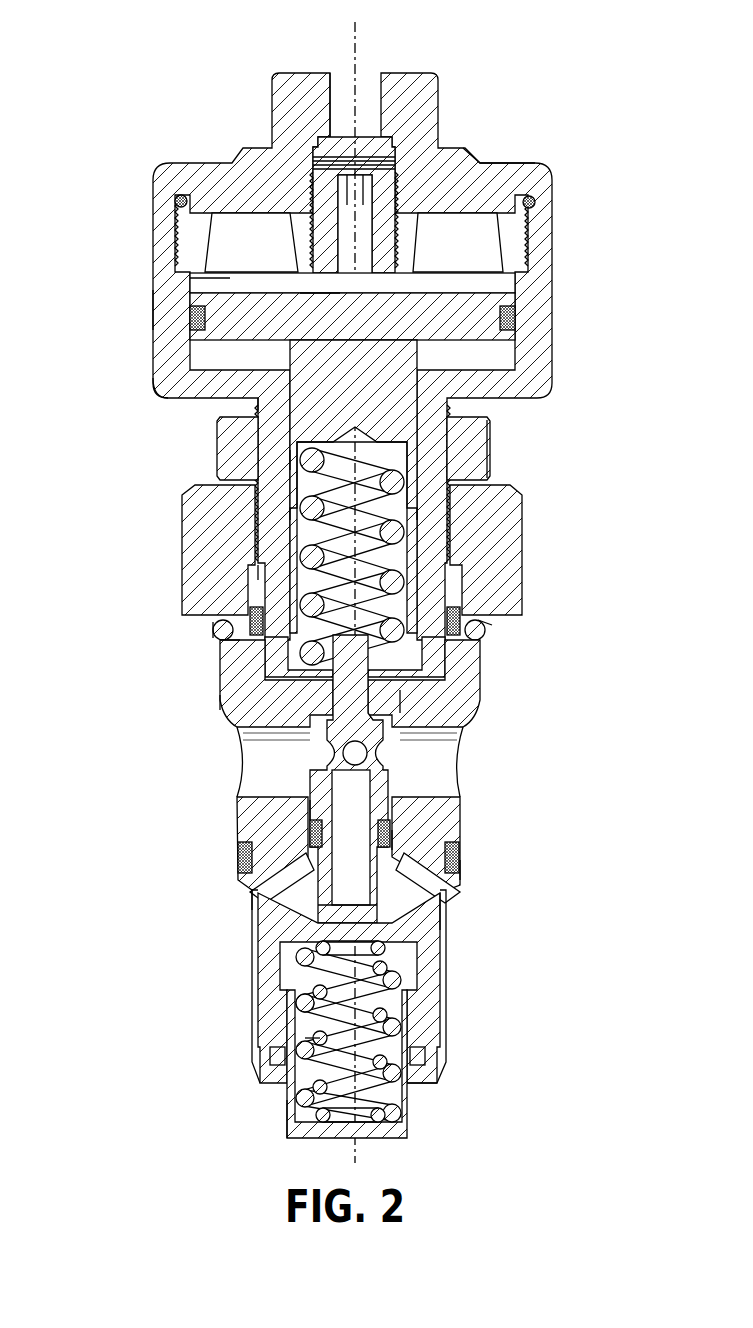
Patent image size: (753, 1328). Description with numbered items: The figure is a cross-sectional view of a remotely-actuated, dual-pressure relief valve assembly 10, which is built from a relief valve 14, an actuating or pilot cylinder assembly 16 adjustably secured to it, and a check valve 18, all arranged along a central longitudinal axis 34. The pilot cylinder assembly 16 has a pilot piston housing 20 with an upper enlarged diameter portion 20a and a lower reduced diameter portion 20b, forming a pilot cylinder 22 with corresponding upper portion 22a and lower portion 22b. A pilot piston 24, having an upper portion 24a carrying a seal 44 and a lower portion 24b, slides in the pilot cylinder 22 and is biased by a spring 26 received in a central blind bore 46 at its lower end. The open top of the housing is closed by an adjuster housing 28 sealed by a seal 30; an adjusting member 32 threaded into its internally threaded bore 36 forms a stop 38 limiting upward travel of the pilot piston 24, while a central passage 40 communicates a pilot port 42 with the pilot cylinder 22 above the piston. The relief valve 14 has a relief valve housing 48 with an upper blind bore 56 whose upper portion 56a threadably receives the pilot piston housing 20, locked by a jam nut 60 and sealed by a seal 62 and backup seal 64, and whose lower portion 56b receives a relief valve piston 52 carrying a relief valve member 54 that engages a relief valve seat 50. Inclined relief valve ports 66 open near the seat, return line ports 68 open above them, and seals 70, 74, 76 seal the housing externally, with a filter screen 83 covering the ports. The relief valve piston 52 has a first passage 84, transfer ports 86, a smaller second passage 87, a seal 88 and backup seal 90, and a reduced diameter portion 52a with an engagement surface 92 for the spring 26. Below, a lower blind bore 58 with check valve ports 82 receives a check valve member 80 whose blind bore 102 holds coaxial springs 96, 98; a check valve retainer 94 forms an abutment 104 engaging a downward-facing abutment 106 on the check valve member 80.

The dual-pressure relief valve assembly 10 is at (355, 598).
The relief valve 14 is at (366, 779).
The actuating or pilot cylinder assembly 16 is at (355, 589).
The check valve 18 is at (333, 1034).
The pilot piston housing 20 is at (553, 232).
The upper enlarged diameter portion of the pilot piston housing 20a is at (153, 318).
The lower reduced diameter portion of the pilot piston housing 20b is at (220, 641).
The pilot cylinder 22 is at (491, 436).
The upper enlarged diameter portion of the pilot cylinder 22a is at (153, 382).
The lower reduced diameter portion of the pilot cylinder 22b is at (300, 410).
The pilot piston 24 is at (481, 345).
The upper enlarged diameter portion of the pilot piston 24a is at (192, 288).
The lower reduced diameter portion of the pilot piston 24b is at (289, 462).
The spring 26 is at (420, 527).
The adjuster housing 28 is at (481, 162).
The seal 30 is at (536, 203).
The adjusting member 32 is at (378, 222).
The central longitudinal axis 34 is at (358, 42).
The internally threaded bore 36 is at (332, 233).
The abutment or stop 38 is at (322, 306).
The central passage 40 is at (368, 246).
The pilot port 42 is at (330, 87).
The seal 44 is at (516, 320).
The central blind bore 46 is at (235, 537).
The relief valve housing 48 is at (365, 550).
The relief valve seat 50 is at (441, 920).
The relief valve piston 52 is at (343, 786).
The reduced diameter portion of the relief valve piston 52a is at (214, 630).
The relief valve member 54 is at (262, 920).
The upper blind bore 56 is at (428, 655).
The upper portion of the upper blind bore 56a is at (266, 652).
The lower portion of the upper blind bore 56b is at (330, 812).
The lower blind bore 58 is at (403, 1004).
The lock or jam nut 60 is at (492, 458).
The seal 62 is at (487, 630).
The backup seal 64 is at (461, 620).
The relief valve ports 66 is at (262, 886).
The return line ports 68 is at (257, 793).
The seal 70 is at (493, 624).
The seal 74 is at (461, 871).
The backup seal 76 is at (459, 850).
The check valve member 80 is at (283, 1120).
The check valve ports 82 is at (258, 963).
The filter screen 83 is at (252, 900).
The first passage 84 is at (248, 847).
The transfer ports 86 is at (323, 749).
The second passage 87 is at (393, 693).
The seal 88 is at (400, 841).
The backup seal 90 is at (391, 826).
The engagement surface 92 is at (221, 704).
The check valve retainer 94 is at (428, 1060).
The spring 96 is at (310, 1003).
The spring 98 is at (318, 1036).
The blind bore 102 is at (283, 1108).
The upward-facing abutment 104 is at (423, 1052).
The downward-facing abutment 106 is at (280, 1058).